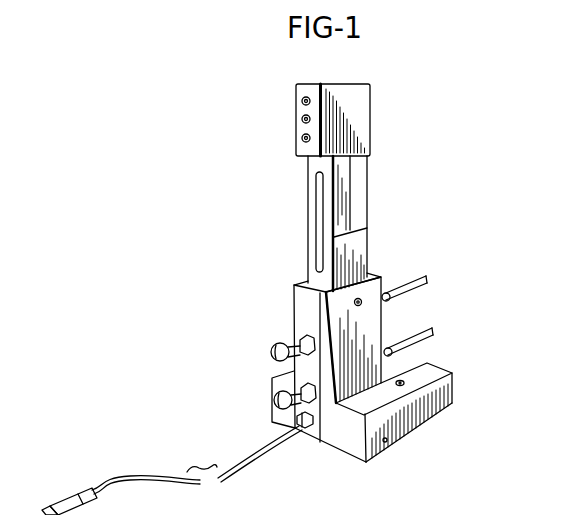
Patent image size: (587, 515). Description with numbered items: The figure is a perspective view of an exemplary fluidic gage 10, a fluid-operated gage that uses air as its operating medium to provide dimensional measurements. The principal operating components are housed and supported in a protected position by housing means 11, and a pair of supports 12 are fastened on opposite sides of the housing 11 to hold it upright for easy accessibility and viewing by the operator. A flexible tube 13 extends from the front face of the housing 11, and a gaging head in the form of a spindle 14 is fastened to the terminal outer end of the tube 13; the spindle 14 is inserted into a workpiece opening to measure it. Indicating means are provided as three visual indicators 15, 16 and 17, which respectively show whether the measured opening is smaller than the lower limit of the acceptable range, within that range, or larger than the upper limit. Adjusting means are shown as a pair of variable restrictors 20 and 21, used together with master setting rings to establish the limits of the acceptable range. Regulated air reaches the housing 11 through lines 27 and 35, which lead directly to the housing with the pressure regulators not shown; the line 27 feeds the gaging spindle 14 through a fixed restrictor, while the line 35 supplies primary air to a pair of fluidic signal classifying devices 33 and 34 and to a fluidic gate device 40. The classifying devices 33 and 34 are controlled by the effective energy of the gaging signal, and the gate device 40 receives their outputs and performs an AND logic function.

The fluidic gage 10 is at (453, 131).
The housing means 11 is at (358, 246).
The supports 12 is at (290, 310).
The flexible tube 13 is at (228, 478).
The spindle 14 is at (74, 490).
The visual indicator 15 is at (300, 141).
The visual indicator 16 is at (301, 121).
The visual indicator 17 is at (301, 101).
The variable restrictor 20 is at (264, 405).
The variable restrictor 21 is at (263, 352).
The line 27 is at (434, 334).
The fluidic signal classifying device 33 is at (360, 187).
The fluidic signal classifying device 34 is at (345, 207).
The line 35 is at (421, 279).
The fluidic gate device 40 is at (371, 99).